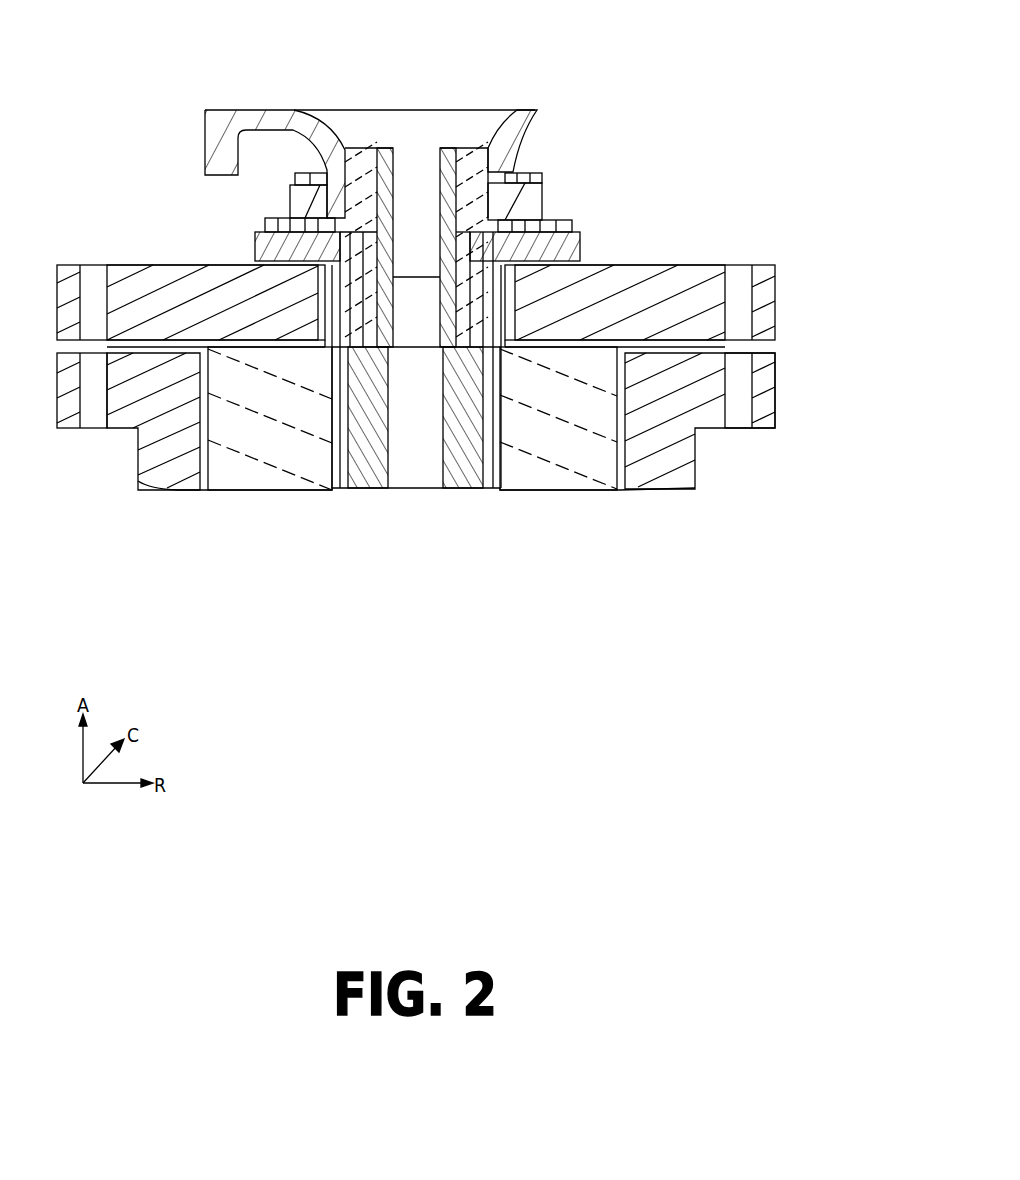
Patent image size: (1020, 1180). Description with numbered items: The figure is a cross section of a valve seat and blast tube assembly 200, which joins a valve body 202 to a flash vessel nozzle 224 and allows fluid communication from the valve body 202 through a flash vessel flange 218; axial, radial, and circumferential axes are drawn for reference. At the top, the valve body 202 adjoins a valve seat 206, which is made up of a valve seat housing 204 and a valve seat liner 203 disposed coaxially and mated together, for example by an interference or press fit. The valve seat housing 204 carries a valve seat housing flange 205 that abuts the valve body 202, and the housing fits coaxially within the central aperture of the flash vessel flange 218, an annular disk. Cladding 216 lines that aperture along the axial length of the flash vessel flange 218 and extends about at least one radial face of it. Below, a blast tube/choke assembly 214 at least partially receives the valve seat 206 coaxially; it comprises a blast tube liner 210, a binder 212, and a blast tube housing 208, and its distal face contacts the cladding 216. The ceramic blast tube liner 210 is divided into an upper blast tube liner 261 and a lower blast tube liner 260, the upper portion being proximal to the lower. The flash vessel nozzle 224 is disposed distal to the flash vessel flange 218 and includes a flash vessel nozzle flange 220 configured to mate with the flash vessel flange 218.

The valve seat and blast tube assembly 200 is at (102, 137).
The valve body 202 is at (515, 128).
The valve seat liner 203 is at (490, 170).
The valve seat housing 204 is at (462, 203).
The valve seat housing flange 205 is at (575, 222).
The valve seat 206 is at (343, 197).
The blast tube housing 208 is at (168, 492).
The blast tube liner 210 is at (360, 472).
The binder 212 is at (487, 417).
The blast tube/choke assembly 214 is at (497, 390).
The cladding 216 is at (295, 266).
The flash vessel flange 218 is at (135, 298).
The flash vessel nozzle flange 220 is at (707, 412).
The flash vessel nozzle 224 is at (135, 455).
The lower blast tube liner 260 is at (427, 440).
The upper blast tube liner 261 is at (407, 202).